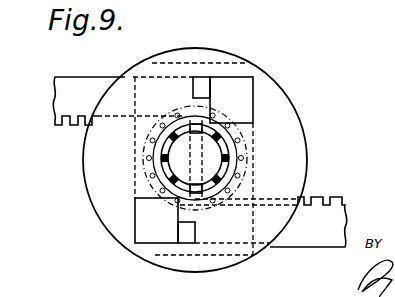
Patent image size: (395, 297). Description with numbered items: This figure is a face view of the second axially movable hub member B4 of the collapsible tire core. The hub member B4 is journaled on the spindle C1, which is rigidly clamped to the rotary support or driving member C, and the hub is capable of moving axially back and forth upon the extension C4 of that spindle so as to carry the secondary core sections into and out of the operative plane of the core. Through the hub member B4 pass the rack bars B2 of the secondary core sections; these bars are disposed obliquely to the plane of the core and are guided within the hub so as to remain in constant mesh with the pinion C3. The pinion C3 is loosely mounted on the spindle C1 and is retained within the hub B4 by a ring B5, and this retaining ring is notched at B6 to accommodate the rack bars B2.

The rack bars B2 is at (328, 193).
The second hub member B4 is at (274, 90).
The ring B5 is at (153, 175).
The notches B6 is at (128, 196).
The rotary support or driving member C is at (208, 122).
The spindle C1 is at (243, 160).
The pinion C3 is at (228, 160).
The extension C4 is at (195, 158).